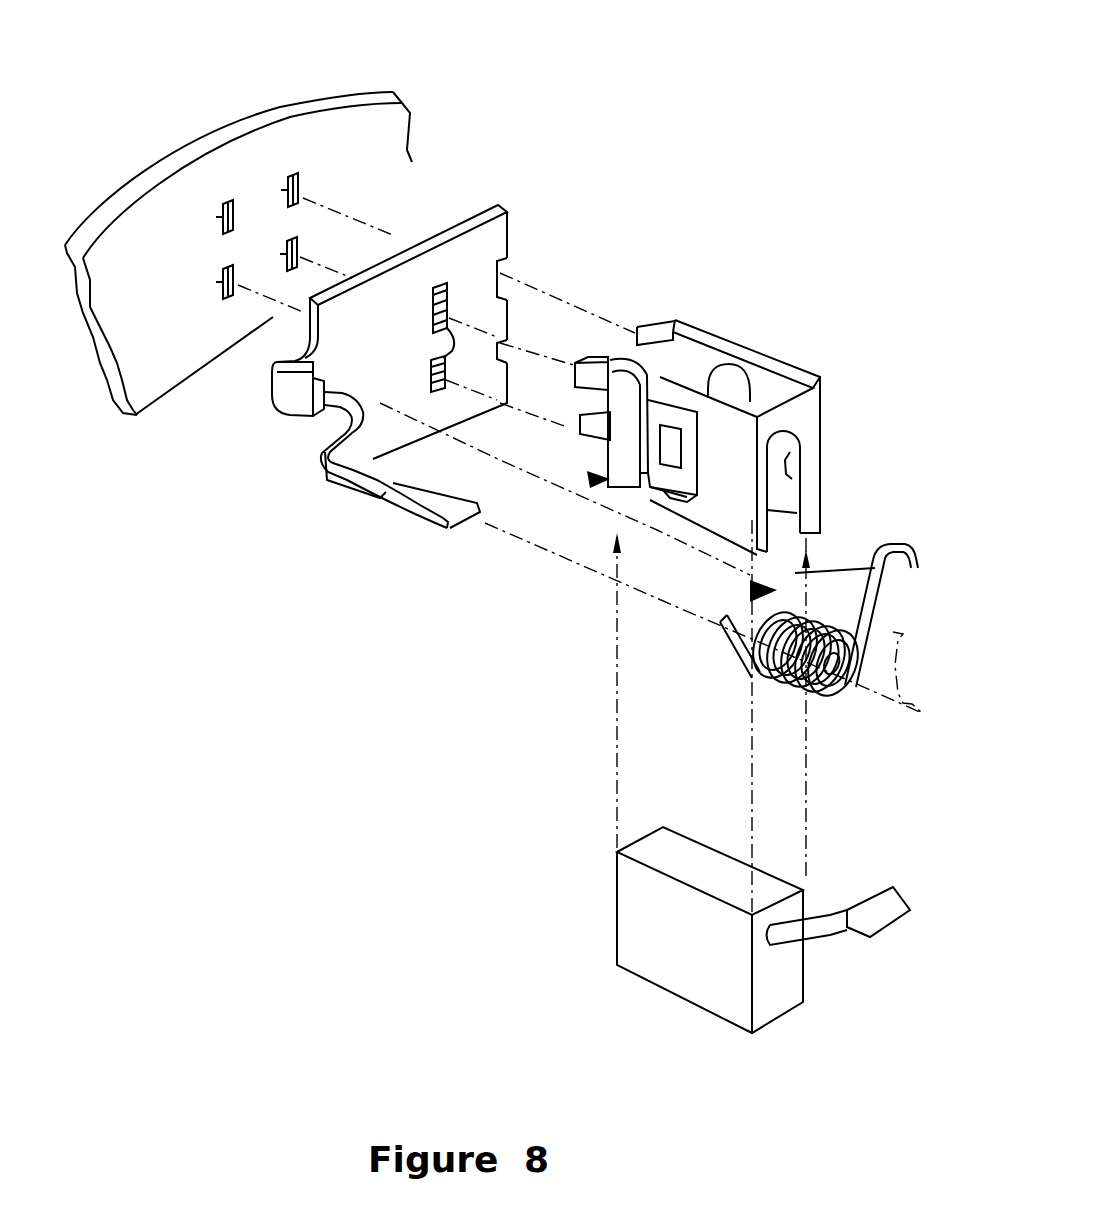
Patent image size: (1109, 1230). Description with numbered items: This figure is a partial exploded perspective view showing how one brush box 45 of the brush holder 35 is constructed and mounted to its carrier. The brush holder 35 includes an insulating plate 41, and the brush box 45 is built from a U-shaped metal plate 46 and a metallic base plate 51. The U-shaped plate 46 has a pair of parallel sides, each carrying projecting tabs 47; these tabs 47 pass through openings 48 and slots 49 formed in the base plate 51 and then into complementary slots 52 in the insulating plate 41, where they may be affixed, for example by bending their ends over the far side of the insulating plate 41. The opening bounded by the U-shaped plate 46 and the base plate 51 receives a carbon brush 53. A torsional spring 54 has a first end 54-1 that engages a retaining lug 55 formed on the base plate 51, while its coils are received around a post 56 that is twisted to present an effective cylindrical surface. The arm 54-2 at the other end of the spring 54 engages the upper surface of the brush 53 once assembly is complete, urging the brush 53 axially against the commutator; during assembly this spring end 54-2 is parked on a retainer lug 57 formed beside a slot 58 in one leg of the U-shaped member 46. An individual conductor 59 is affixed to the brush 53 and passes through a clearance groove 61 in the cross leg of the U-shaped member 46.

The brush holder 35 is at (542, 145).
The insulating plate 41 is at (380, 94).
The brush box 45 is at (733, 150).
The U-shaped metal plate 46 is at (676, 328).
The projecting tab 47 is at (585, 350).
The opening 48 is at (447, 284).
The slot 49 is at (500, 277).
The metallic base plate 51 is at (508, 222).
The complementary slot 52 is at (286, 232).
The brush 53 is at (617, 907).
The torsional spring 54 is at (818, 698).
The first end of spring 54-1 is at (730, 646).
The spring end arm 54-2 is at (900, 562).
The retaining lug 55 is at (290, 393).
The post 56 is at (430, 528).
The retainer lug 57 is at (717, 333).
The slot 58 is at (613, 510).
The conductor 59 is at (870, 940).
The clearance groove 61 is at (810, 437).